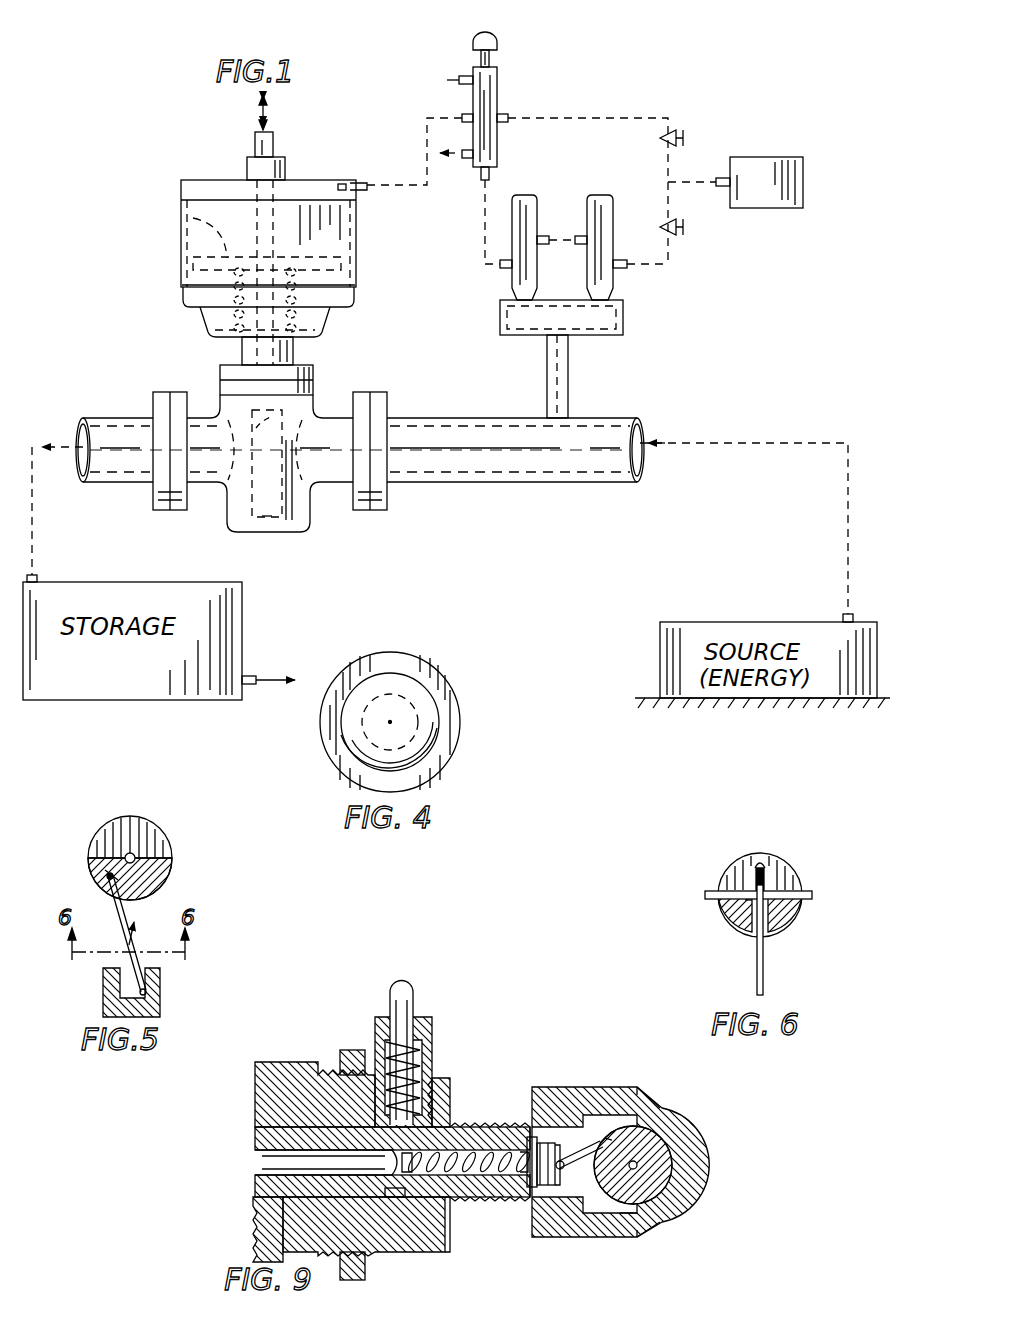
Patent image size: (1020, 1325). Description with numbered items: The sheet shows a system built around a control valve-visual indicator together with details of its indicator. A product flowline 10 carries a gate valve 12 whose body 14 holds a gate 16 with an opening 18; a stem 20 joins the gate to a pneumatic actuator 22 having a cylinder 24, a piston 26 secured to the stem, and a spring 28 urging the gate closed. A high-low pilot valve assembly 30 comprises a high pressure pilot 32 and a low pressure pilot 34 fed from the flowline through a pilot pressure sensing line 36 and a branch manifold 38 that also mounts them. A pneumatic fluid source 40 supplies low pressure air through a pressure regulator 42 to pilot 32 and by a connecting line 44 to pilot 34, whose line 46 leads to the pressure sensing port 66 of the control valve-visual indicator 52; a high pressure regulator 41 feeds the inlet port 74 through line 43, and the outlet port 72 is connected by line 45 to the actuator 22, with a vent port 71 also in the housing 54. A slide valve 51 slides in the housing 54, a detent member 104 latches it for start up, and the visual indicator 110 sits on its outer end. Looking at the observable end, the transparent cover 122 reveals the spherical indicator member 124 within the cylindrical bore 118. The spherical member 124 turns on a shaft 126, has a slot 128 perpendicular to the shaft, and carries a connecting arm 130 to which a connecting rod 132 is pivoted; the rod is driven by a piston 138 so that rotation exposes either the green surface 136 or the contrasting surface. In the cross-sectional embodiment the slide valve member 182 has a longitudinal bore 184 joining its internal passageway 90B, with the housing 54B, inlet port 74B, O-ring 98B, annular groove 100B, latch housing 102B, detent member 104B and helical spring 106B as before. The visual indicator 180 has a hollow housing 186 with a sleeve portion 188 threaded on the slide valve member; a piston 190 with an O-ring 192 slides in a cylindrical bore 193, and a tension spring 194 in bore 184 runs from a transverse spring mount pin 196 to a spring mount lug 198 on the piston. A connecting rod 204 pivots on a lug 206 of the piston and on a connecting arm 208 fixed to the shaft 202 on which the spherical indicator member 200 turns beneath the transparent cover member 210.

In FIG. 1, the product flowline 10 is at (500, 465).
In FIG. 1, the gate valve 12 is at (335, 383).
In FIG. 1, the valve body 14 is at (297, 500).
In FIG. 1, the gate 16 is at (275, 520).
In FIG. 1, the opening 18 is at (265, 433).
In FIG. 1, the stem 20 is at (290, 355).
In FIG. 1, the pneumatic actuator 22 is at (215, 180).
In FIG. 1, the cylinder 24 is at (180, 250).
In FIG. 1, the piston 26 is at (188, 222).
In FIG. 1, the spring 28 is at (232, 318).
In FIG. 1, the high-low pilot valve assembly 30 is at (660, 290).
In FIG. 1, the high pressure pilot valve 32 is at (600, 205).
In FIG. 1, the low pressure pilot valve 34 is at (520, 205).
In FIG. 1, the pilot pressure sensing line 36 is at (570, 380).
In FIG. 1, the branch manifold 38 is at (600, 318).
In FIG. 1, the pneumatic fluid source 40 is at (760, 170).
In FIG. 1, the high pressure regulator 41 is at (682, 135).
In FIG. 1, the pressure regulator 42 is at (682, 230).
In FIG. 1, the supply line 43 is at (640, 117).
In FIG. 1, the connecting line 44 is at (548, 236).
In FIG. 1, the line 45 is at (425, 134).
In FIG. 1, the line 46 is at (480, 252).
In FIG. 1, the slide valve 51 is at (500, 58).
In FIG. 1, the control valve-visual indicator 52 is at (512, 85).
In FIG. 1, the housing 54 is at (500, 102).
In FIG. 1, the pressure sensing port 66 is at (480, 175).
In FIG. 1, the vent port 71 is at (462, 158).
In FIG. 1, the outlet port 72 is at (462, 116).
In FIG. 1, the inlet port 74 is at (505, 120).
In FIG. 1, the detent member 104 is at (462, 78).
In FIG. 1, the visual indicator 110 is at (470, 47).
In FIG. 4, the cylindrical bore 118 is at (360, 735).
In FIG. 4, the transparent cover 122 is at (393, 708).
In FIG. 5, the spherical indicator member 124 is at (122, 828).
In FIG. 6, the spherical indicator member 124 is at (740, 862).
In FIG. 5, the shaft 126 is at (137, 853).
In FIG. 6, the shaft 126 is at (705, 893).
In FIG. 6, the slot 128 is at (767, 872).
In FIG. 5, the connecting arm 130 is at (92, 864).
In FIG. 6, the connecting arm 130 is at (720, 915).
In FIG. 5, the connecting rod 132 is at (108, 905).
In FIG. 6, the connecting rod 132 is at (756, 966).
In FIG. 5, the green surface 136 is at (160, 876).
In FIG. 6, the green surface 136 is at (793, 920).
In FIG. 5, the piston 138 is at (160, 988).
In FIG. 9, the visual indicator 180 is at (690, 1097).
In FIG. 9, the slide valve member 182 is at (458, 1260).
In FIG. 9, the longitudinal bore 184 is at (443, 1132).
In FIG. 9, the hollow housing 186 is at (585, 1238).
In FIG. 9, the sleeve portion 188 is at (480, 1210).
In FIG. 9, the piston 190 is at (500, 1180).
In FIG. 9, the O-ring 192 is at (546, 1188).
In FIG. 9, the cylindrical bore 193 is at (638, 1215).
In FIG. 9, the tension spring 194 is at (488, 1142).
In FIG. 9, the port 196 is at (405, 1195).
In FIG. 9, the spring mount lug 198 is at (526, 1140).
In FIG. 9, the spherical indicator member 200 is at (672, 1160).
In FIG. 9, the shaft 202 is at (660, 1150).
In FIG. 9, the connecting rod 204 is at (590, 1138).
In FIG. 9, the lug 206 is at (565, 1160).
In FIG. 9, the connecting arm 208 is at (668, 1128).
In FIG. 9, the transparent cover member 210 is at (690, 1180).
In FIG. 9, the housing 54B is at (382, 1240).
In FIG. 9, the inlet port 74B is at (255, 1242).
In FIG. 9, the slide valve internal passageway 90B is at (262, 1165).
In FIG. 9, the O-ring 98B is at (256, 1140).
In FIG. 9, the annular groove 100B is at (258, 1098).
In FIG. 9, the latch housing 102B is at (385, 1018).
In FIG. 9, the detent member 104B is at (400, 980).
In FIG. 9, the helical spring 106B is at (380, 1050).